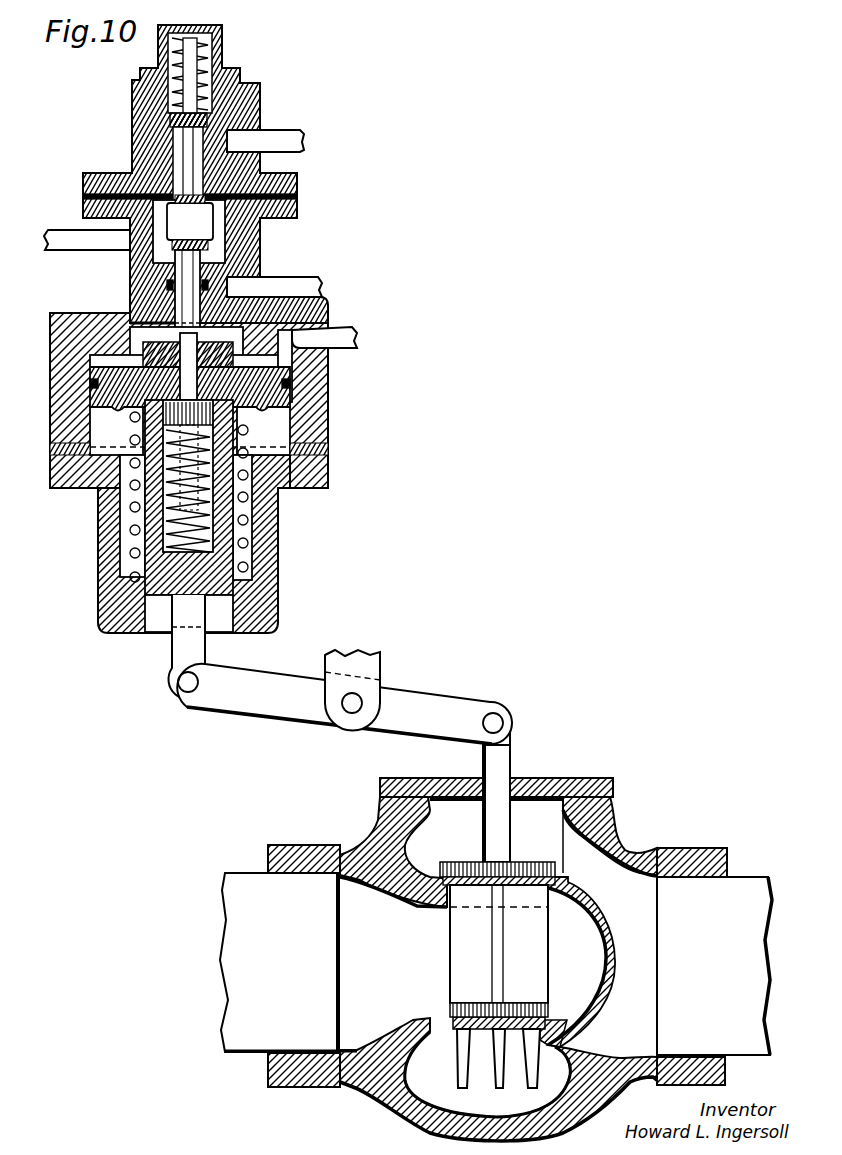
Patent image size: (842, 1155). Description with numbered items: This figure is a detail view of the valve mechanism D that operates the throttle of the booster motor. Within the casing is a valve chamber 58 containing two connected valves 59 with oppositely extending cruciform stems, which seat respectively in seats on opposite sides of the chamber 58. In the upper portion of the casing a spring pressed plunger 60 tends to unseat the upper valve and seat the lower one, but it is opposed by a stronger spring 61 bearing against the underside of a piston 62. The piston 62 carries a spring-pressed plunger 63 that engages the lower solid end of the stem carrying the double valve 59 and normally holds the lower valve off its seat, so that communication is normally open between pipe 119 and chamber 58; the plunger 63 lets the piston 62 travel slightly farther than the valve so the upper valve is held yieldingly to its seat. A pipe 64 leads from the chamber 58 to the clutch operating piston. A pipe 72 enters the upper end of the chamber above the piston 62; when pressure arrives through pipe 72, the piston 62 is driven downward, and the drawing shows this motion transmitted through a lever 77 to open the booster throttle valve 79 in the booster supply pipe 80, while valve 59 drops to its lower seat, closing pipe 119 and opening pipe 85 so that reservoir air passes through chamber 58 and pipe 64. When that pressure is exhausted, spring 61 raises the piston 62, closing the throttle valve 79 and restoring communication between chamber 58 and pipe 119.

The valve mechanism D is at (340, 312).
The spring pressed plunger 60 is at (197, 64).
The pipe 85 is at (300, 132).
The pipe 64 is at (58, 232).
The valve chamber 58 is at (270, 237).
The double valve 59 is at (345, 330).
The pipe 119 is at (322, 278).
The pipe 72 is at (357, 340).
The piston 62 is at (283, 396).
The spring-pressed plunger 63 is at (317, 470).
The spring 61 is at (240, 432).
The lever 77 is at (277, 708).
The booster throttle valve 79 is at (533, 922).
The booster supply pipe 80 is at (253, 910).